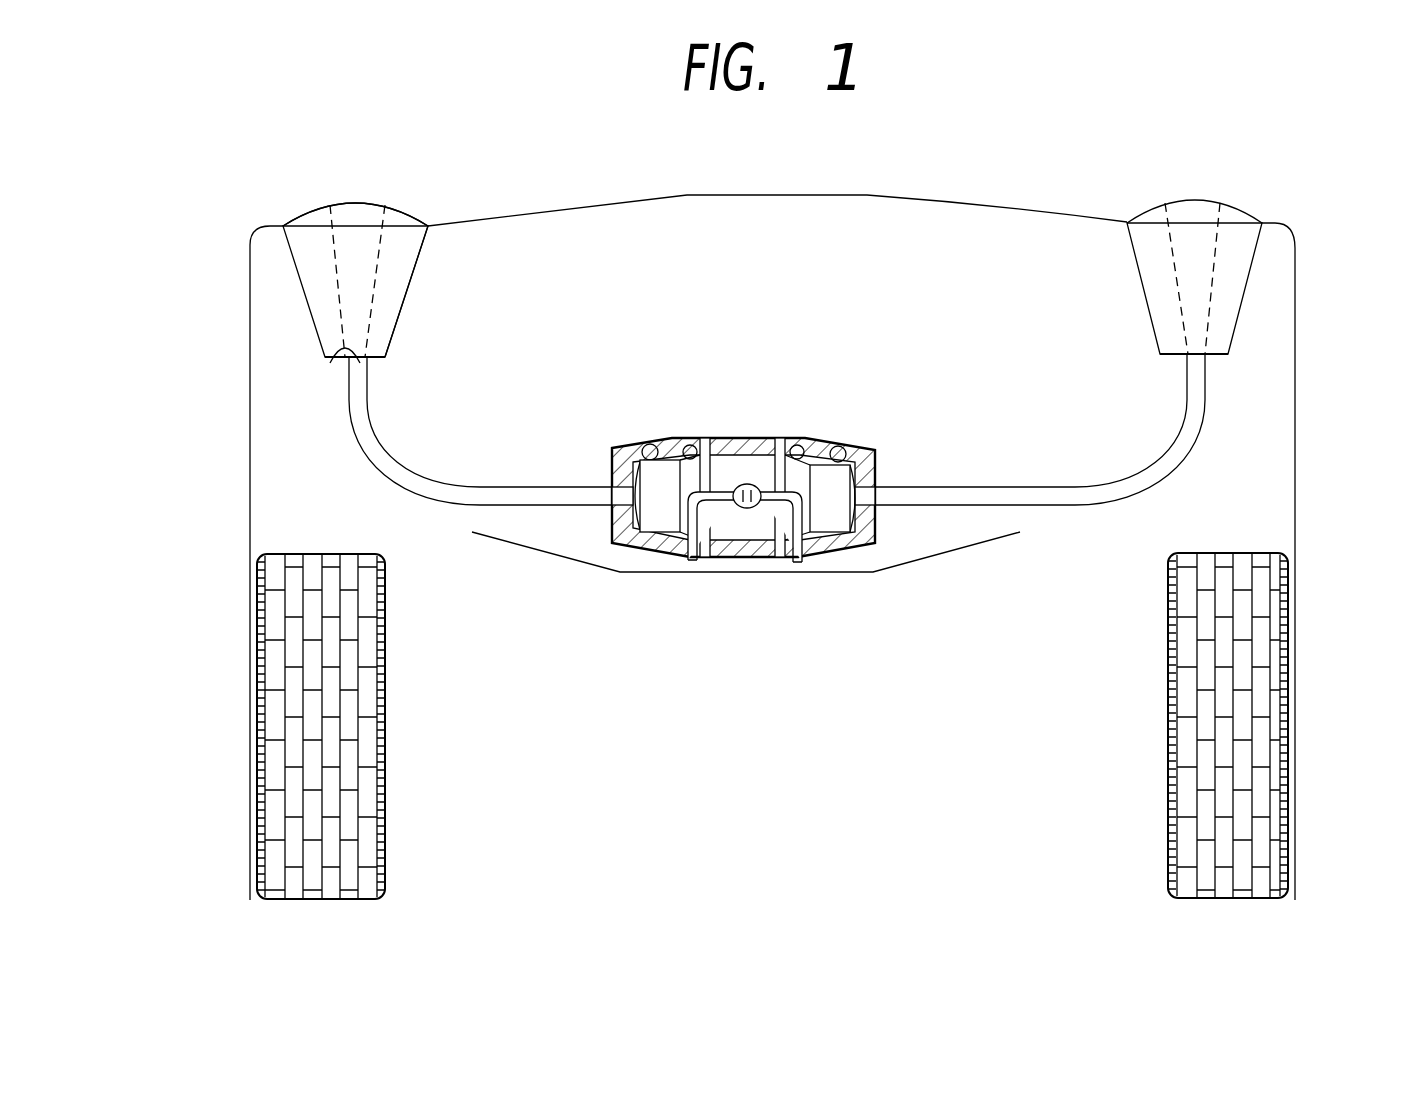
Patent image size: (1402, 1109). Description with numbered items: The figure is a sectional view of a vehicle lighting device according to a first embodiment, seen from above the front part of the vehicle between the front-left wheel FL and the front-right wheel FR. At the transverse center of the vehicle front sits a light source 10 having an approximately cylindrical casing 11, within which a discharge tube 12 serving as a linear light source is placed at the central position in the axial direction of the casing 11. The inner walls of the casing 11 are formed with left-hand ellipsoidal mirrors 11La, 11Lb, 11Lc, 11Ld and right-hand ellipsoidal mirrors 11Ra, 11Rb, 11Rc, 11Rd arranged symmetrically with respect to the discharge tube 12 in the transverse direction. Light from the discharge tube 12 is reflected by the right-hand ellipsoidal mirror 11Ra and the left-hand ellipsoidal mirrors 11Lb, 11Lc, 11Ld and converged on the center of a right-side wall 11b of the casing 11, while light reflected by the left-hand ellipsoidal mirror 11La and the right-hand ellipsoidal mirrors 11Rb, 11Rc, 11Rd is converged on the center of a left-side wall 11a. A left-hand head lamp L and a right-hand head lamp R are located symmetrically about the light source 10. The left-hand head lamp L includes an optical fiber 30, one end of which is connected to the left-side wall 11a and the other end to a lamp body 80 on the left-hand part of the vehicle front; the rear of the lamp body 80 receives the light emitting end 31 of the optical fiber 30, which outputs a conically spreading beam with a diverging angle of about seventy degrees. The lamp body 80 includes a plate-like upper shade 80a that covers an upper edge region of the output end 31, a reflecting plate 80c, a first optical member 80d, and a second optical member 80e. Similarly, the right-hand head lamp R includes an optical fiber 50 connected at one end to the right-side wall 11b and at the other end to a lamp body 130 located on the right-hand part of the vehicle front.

The light source 10 is at (840, 370).
The casing 11 is at (740, 450).
The left-side wall 11a is at (607, 515).
The right-side wall 11b is at (880, 527).
The left-hand ellipsoidal mirror 11La is at (720, 557).
The left-hand ellipsoidal mirror 11Lb is at (725, 450).
The left-hand ellipsoidal mirror 11Lc is at (685, 448).
The left-hand ellipsoidal mirror 11Ld is at (650, 440).
The right-hand ellipsoidal mirror 11Ra is at (787, 560).
The right-hand ellipsoidal mirror 11Rb is at (772, 450).
The right-hand ellipsoidal mirror 11Rc is at (805, 445).
The right-hand ellipsoidal mirror 11Rd is at (880, 462).
The discharge tube 12 is at (747, 560).
The optical fiber 30 is at (415, 463).
The light emitting end 31 is at (333, 365).
The optical fiber 50 is at (1130, 475).
The lamp body 80 is at (293, 266).
The upper shade 80a is at (383, 360).
The reflecting plate 80c is at (402, 258).
The first optical member 80d is at (390, 210).
The second optical member 80e is at (377, 283).
The lamp body 130 is at (1248, 288).
The left-hand head lamp L is at (425, 200).
The right-hand head lamp R is at (1135, 190).
The front-left wheel FL is at (385, 748).
The front-right wheel FR is at (1168, 748).